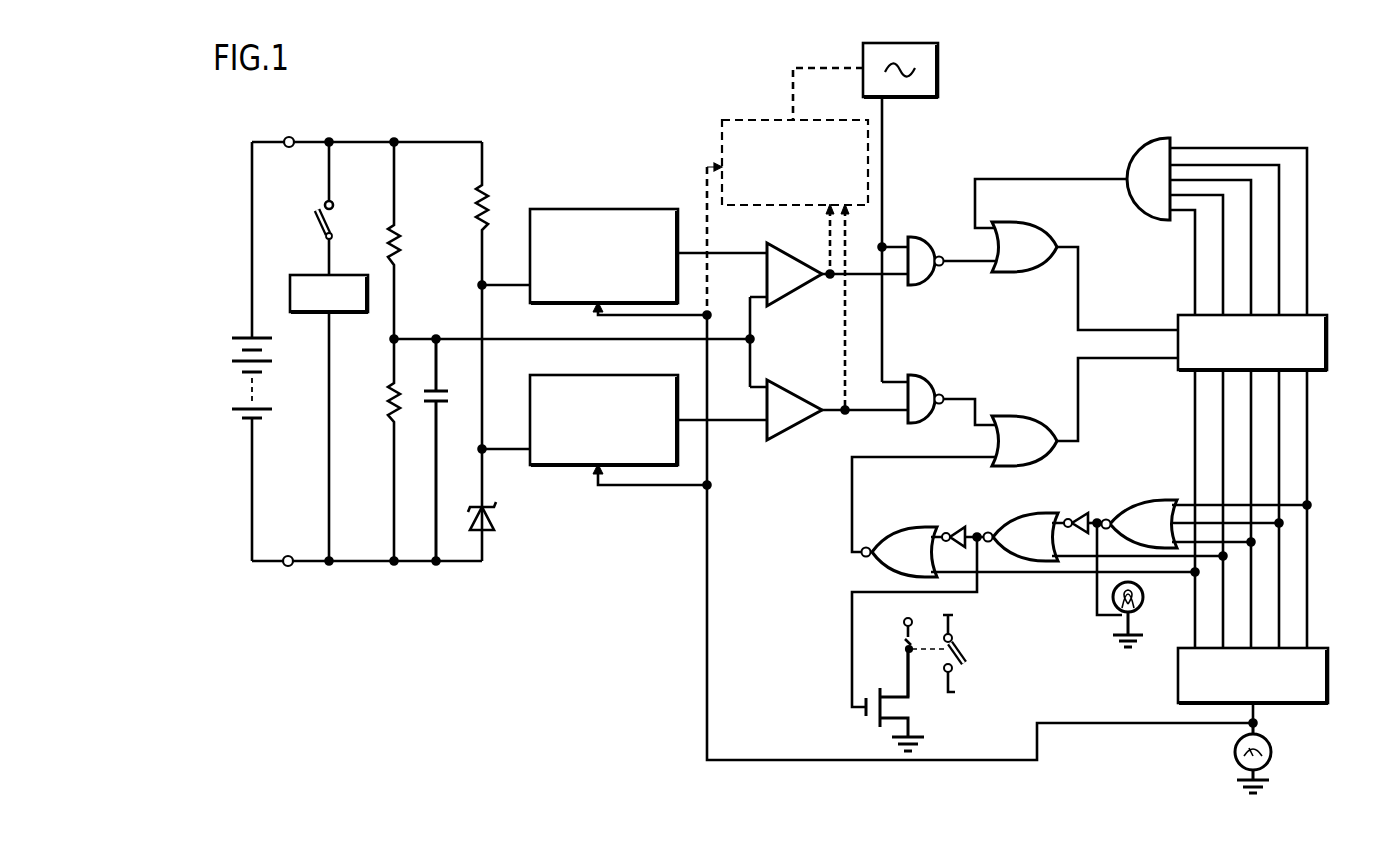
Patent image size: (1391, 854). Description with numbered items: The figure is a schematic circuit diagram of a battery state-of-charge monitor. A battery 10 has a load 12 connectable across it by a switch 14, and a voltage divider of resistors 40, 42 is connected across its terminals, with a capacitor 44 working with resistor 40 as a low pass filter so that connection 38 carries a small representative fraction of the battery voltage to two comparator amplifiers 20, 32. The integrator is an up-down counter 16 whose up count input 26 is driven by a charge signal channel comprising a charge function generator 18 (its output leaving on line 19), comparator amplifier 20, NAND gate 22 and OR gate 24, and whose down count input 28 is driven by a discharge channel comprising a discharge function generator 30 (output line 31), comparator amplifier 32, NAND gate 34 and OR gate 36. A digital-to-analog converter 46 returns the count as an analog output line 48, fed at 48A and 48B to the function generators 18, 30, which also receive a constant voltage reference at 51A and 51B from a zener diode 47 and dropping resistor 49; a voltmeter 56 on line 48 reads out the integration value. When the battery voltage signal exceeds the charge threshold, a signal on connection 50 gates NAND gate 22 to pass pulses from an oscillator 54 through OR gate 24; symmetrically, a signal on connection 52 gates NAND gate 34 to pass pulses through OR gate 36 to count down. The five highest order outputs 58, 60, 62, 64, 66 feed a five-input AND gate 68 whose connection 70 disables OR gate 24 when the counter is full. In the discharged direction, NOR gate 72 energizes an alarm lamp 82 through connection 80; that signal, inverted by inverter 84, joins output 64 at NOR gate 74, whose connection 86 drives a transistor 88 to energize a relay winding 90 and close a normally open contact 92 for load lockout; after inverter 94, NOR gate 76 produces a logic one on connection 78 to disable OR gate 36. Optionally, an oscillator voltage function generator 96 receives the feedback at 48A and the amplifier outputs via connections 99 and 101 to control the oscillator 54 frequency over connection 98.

The battery 10 is at (246, 340).
The load 12 is at (311, 275).
The switch 14 is at (314, 214).
The up-down counter 16 is at (1327, 345).
The charge function generator 18 is at (596, 208).
The charge function generator output line 19 is at (748, 257).
The comparator amplifier 20 is at (775, 244).
The NAND gate 22 is at (938, 272).
The OR gate 24 is at (1046, 222).
The up count input 26 is at (1103, 320).
The down count input 28 is at (1095, 370).
The discharge function generator 30 is at (572, 375).
The discharge function generator output line 31 is at (744, 419).
The comparator amplifier 32 is at (808, 366).
The NAND gate 34 is at (920, 378).
The OR gate 36 is at (1040, 416).
The connection 38 is at (530, 338).
The resistor 40 is at (396, 236).
The resistor 42 is at (390, 394).
The capacitor 44 is at (468, 381).
The digital-to-analog converter 46 is at (1328, 668).
The zener diode 47 is at (496, 520).
The analog output line 48 is at (709, 525).
The connection 48A is at (652, 318).
The connection 48B is at (652, 488).
The dropping resistor 49 is at (488, 199).
The connection 50 is at (897, 276).
The constant voltage reference connection 51A is at (520, 270).
The constant voltage reference connection 51B is at (522, 432).
The connection 52 is at (880, 409).
The oscillator 54 is at (935, 80).
The voltmeter 56 is at (1272, 750).
The digital output line 58 is at (1316, 190).
The digital output line 60 is at (1285, 215).
The digital output line 62 is at (1256, 250).
The digital output line 64 is at (1220, 225).
The digital output line 66 is at (1194, 286).
The five-input AND gate 68 is at (1145, 152).
The connection 70 is at (1068, 180).
The NOR gate 72 is at (1170, 500).
The NOR gate 74 is at (1048, 512).
The NOR gate 76 is at (924, 526).
The connection 78 is at (898, 458).
The connection 80 is at (1090, 612).
The alarm lamp 82 is at (1144, 595).
The inverter 84 is at (1078, 512).
The connection 86 is at (980, 590).
The transistor 88 is at (862, 715).
The relay winding 90 is at (900, 649).
The normally open contact 92 is at (964, 655).
The inverter 94 is at (958, 525).
The oscillator voltage function generator 96 is at (770, 118).
The connection 98 is at (836, 66).
The connection 99 is at (826, 240).
The connection 101 is at (840, 330).